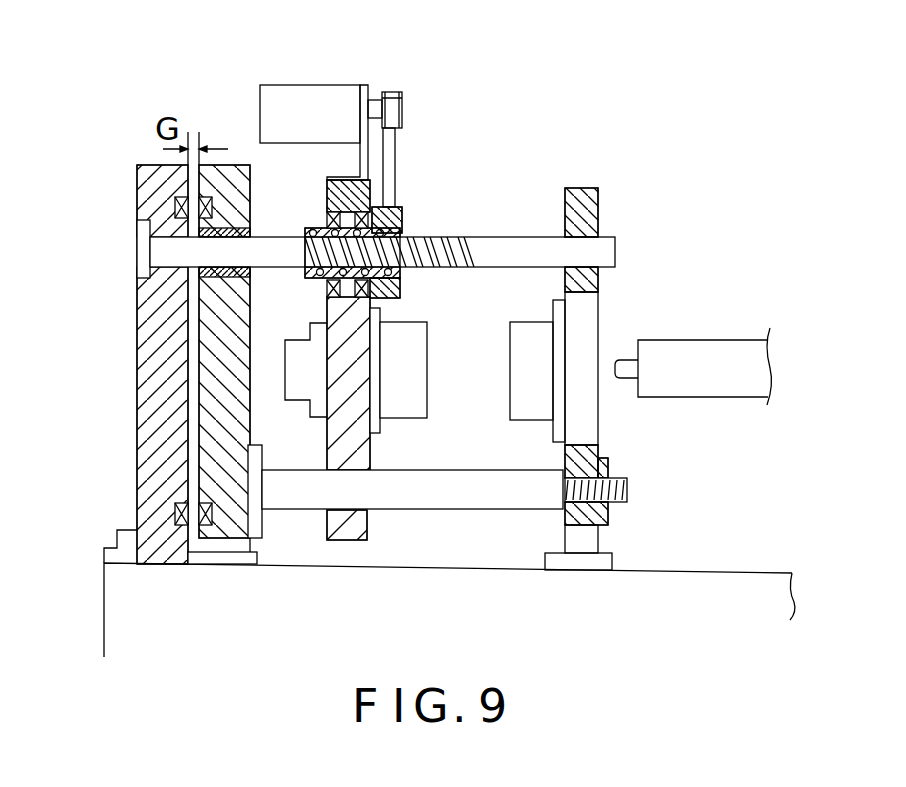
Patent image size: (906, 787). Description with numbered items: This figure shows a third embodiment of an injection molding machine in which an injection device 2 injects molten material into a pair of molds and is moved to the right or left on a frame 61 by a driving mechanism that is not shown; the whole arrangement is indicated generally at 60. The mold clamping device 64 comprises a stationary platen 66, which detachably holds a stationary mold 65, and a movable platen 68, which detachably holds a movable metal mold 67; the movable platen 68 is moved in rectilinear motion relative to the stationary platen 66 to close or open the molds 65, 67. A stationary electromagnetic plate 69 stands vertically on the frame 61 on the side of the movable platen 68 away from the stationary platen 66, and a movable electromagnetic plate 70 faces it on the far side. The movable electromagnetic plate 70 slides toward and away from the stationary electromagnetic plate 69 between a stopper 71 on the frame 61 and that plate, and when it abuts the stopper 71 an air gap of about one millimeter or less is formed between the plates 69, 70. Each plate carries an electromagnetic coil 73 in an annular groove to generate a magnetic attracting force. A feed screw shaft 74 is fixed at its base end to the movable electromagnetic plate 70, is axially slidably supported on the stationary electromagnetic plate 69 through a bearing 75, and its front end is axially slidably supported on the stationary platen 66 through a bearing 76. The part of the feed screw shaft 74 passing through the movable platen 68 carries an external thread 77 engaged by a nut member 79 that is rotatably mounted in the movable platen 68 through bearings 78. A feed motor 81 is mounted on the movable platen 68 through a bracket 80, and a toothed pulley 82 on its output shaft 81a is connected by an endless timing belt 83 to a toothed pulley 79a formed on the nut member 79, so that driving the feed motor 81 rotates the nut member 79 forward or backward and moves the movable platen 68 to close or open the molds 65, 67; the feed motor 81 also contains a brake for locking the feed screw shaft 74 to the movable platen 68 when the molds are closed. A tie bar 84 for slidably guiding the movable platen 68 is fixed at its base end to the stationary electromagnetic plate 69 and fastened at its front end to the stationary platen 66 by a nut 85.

The injection device 2 is at (720, 340).
The feed drive unit 60 is at (627, 90).
The frame 61 is at (113, 614).
The mold clamping device 64 is at (487, 135).
The stationary mold 65 is at (513, 400).
The stationary platen 66 is at (598, 320).
The movable metal mold 67 is at (418, 357).
The movable platen 68 is at (350, 460).
The stationary electromagnetic plate 69 is at (238, 325).
The movable electromagnetic plate 70 is at (140, 432).
The stopper 71 is at (108, 546).
The electromagnetic coil 73 is at (220, 165).
The feed screw shaft 74 is at (160, 255).
The bearing 75 is at (248, 228).
The bearing 76 is at (600, 230).
The external thread 77 is at (452, 238).
The bearings 78 is at (340, 187).
The nut member 79 is at (402, 222).
The toothed pulley 79a is at (395, 207).
The bracket 80 is at (366, 88).
The feed motor 81 is at (290, 85).
The output shaft 81a is at (372, 92).
The toothed pulley 82 is at (392, 108).
The endless timing belt 83 is at (393, 152).
The tie bar 84 is at (437, 500).
The nut 85 is at (612, 522).